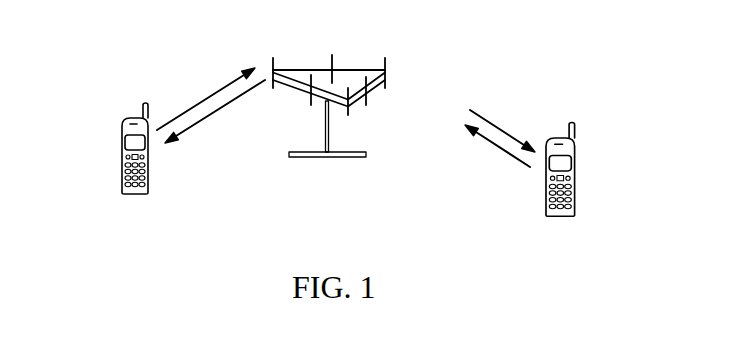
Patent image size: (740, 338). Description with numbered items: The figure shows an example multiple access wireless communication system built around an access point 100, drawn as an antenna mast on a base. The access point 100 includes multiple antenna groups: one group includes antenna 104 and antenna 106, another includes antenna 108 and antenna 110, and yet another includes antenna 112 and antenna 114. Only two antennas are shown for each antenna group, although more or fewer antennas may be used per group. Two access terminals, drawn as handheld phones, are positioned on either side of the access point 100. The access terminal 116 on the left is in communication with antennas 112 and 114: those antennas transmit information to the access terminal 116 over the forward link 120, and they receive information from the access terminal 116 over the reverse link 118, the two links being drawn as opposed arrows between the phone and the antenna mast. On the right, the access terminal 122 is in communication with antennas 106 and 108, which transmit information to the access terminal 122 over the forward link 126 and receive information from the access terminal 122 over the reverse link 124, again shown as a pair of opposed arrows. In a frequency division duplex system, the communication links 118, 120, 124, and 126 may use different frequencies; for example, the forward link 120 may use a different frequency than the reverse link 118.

The access point 100 is at (337, 157).
The antenna 104 is at (348, 112).
The antenna 106 is at (366, 100).
The antenna 108 is at (385, 79).
The antenna 110 is at (332, 60).
The antenna 112 is at (272, 60).
The antenna 114 is at (311, 100).
The access terminal 116 is at (122, 132).
The reverse link 118 is at (210, 92).
The forward link 120 is at (203, 125).
The access terminal 122 is at (575, 162).
The reverse link 124 is at (508, 152).
The forward link 126 is at (500, 129).